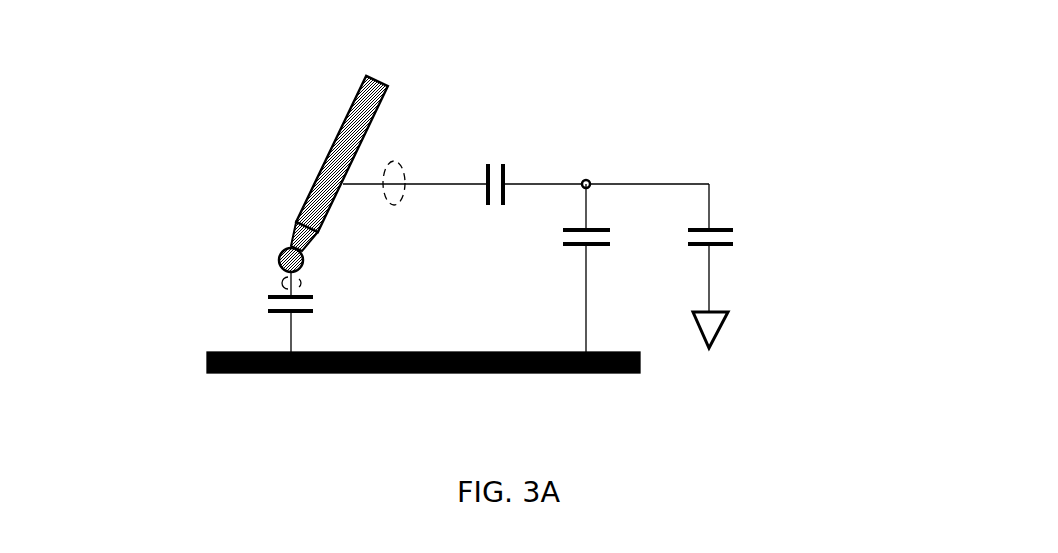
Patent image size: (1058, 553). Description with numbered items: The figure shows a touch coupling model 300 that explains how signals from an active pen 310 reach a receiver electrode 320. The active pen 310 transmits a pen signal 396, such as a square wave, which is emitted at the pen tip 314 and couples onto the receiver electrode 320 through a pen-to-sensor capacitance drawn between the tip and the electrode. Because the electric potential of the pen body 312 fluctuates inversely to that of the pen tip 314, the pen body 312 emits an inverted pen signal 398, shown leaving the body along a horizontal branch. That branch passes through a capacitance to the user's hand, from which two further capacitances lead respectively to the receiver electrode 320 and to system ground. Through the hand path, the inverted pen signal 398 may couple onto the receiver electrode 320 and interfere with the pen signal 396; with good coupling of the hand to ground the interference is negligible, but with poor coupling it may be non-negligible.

The touch coupling model 300 is at (688, 112).
The active pen 310 is at (349, 64).
The pen body 312 is at (338, 155).
The pen tip 314 is at (283, 251).
The receiver electrode 320 is at (477, 372).
The pen signal 396 is at (283, 281).
The inverted pen signal 398 is at (397, 163).